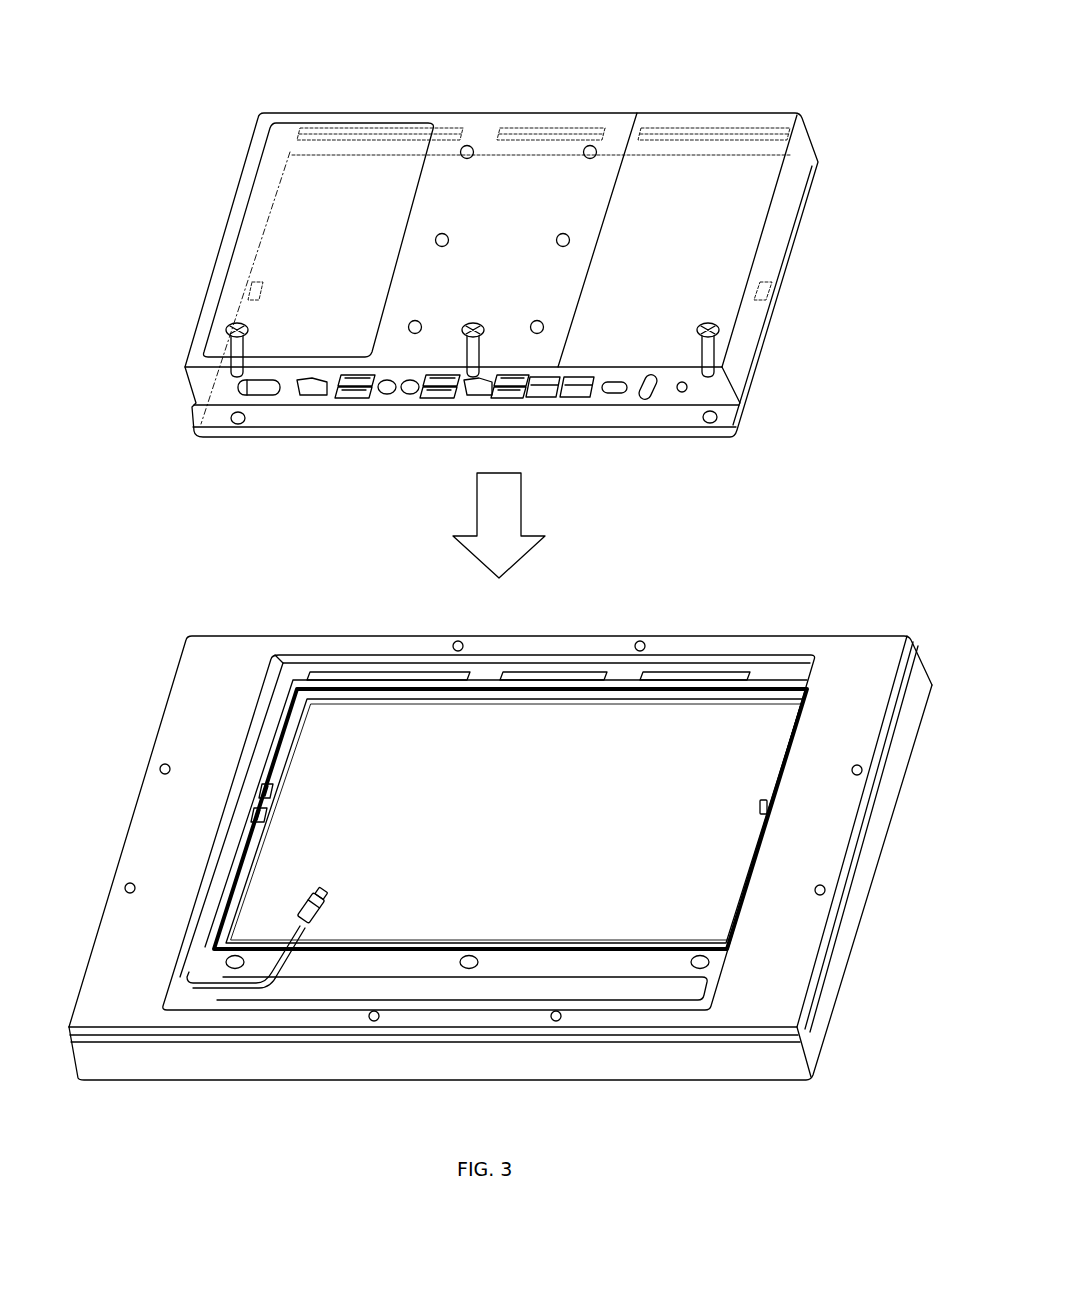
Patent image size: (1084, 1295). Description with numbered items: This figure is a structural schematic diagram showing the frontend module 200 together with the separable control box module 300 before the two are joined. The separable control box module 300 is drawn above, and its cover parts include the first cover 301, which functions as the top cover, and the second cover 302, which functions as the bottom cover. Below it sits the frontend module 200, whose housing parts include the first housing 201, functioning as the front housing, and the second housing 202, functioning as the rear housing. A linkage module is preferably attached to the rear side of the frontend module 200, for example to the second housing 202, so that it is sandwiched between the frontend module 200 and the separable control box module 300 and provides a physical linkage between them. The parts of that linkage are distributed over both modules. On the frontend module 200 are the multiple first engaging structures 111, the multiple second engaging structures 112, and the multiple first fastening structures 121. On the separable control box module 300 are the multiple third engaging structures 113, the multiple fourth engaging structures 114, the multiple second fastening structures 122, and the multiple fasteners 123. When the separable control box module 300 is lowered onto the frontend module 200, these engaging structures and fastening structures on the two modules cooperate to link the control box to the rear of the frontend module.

The separable control box module 300 is at (538, 86).
The first cover 301 is at (775, 122).
The second cover 302 is at (754, 373).
The third engaging structures 113 is at (340, 131).
The fourth engaging structures 114 is at (269, 290).
The fasteners 123 is at (248, 334).
The second fastening structures 122 is at (707, 437).
The frontend module 200 is at (728, 618).
The second housing 202 is at (836, 649).
The first housing 201 is at (821, 1033).
The first engaging structures 111 is at (443, 674).
The second engaging structures 112 is at (268, 802).
The first fastening structures 121 is at (477, 958).